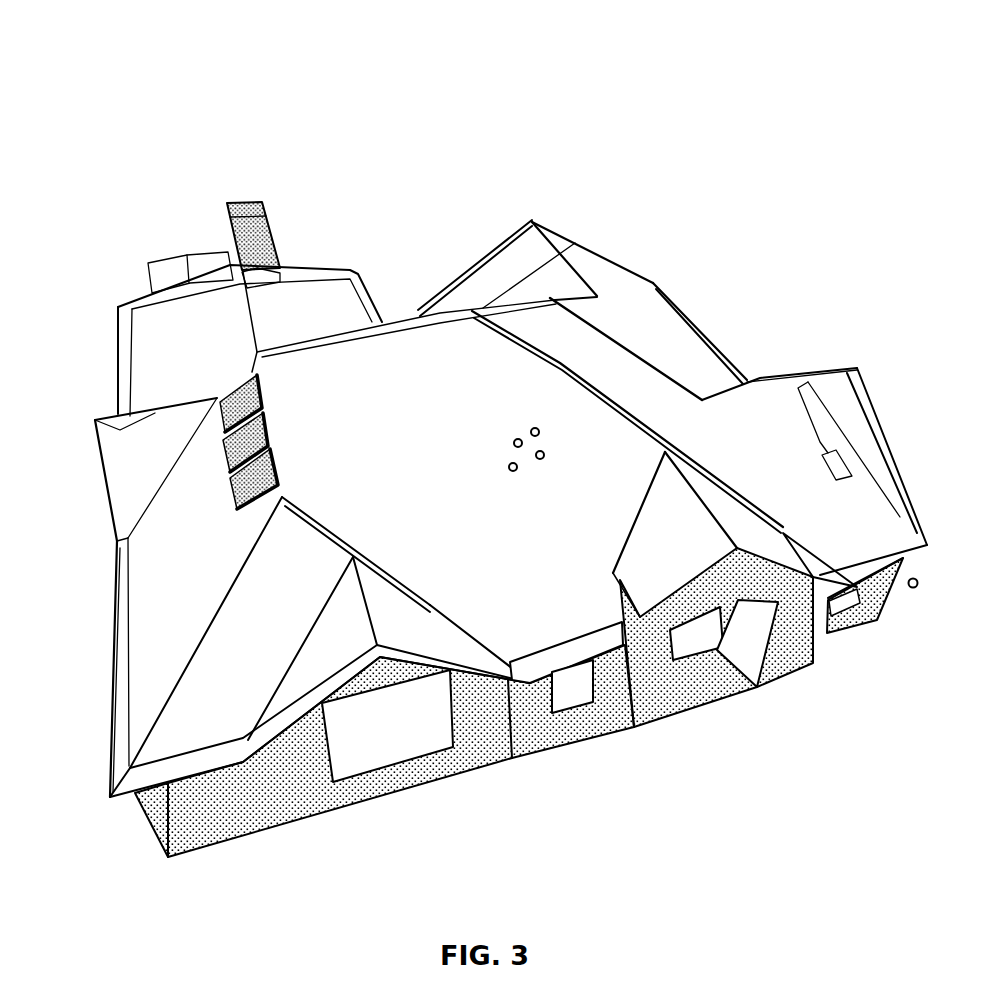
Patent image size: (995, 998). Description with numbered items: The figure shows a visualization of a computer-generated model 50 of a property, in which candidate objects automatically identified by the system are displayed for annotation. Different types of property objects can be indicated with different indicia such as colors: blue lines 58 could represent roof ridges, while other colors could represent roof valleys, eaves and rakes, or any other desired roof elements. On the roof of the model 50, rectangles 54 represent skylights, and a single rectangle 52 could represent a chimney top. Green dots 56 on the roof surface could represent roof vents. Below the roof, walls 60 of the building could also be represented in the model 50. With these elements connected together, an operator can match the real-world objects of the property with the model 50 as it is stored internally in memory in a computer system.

The model 50 is at (118, 55).
The rectangle 52 is at (245, 206).
The rectangles 54 is at (250, 393).
The green dots 56 is at (535, 427).
The blue lines 58 is at (642, 357).
The walls 60 is at (900, 573).